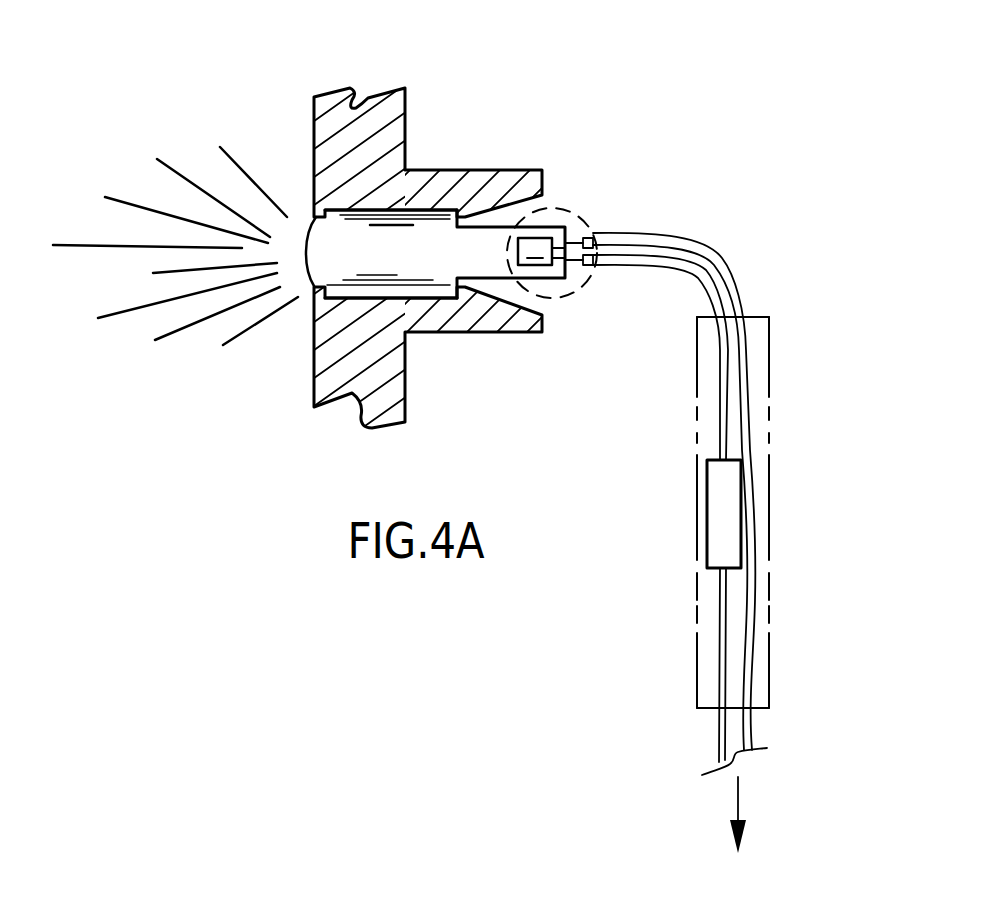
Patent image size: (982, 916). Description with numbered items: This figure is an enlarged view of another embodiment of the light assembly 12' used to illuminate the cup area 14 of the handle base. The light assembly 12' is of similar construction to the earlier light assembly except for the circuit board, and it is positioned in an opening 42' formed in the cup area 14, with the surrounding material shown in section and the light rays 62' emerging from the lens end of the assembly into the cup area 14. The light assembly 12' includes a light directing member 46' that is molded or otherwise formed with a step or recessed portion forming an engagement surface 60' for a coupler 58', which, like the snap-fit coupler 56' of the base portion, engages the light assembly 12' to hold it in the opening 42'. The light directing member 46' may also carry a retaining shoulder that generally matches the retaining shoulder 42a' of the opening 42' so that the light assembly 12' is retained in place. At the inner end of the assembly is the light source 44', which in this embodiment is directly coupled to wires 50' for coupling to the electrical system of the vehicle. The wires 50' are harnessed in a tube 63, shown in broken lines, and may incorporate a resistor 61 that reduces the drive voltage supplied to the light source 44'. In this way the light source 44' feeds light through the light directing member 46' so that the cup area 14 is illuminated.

The light assembly 12' is at (606, 181).
The cup area 14 is at (300, 354).
The opening 42' is at (351, 190).
The retaining shoulder 42a' is at (391, 159).
The light source 44' is at (588, 221).
The light directing member 46' is at (435, 328).
The wires 50' is at (701, 518).
The housing flange 56' is at (475, 244).
The coupler 58' is at (576, 187).
The engagement surface 60' is at (511, 175).
The resistor 61 is at (692, 503).
The light rays 62' is at (176, 220).
The tube 63 is at (790, 380).